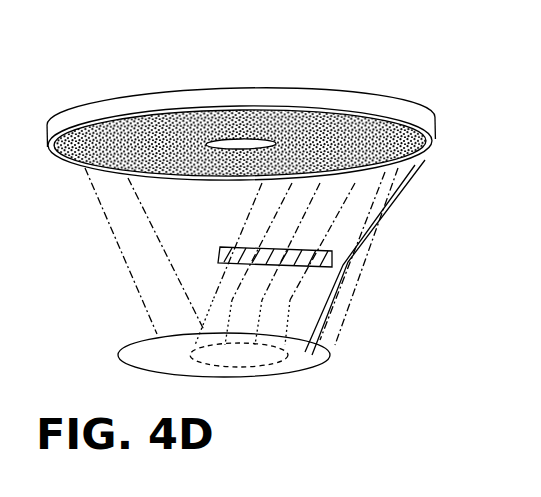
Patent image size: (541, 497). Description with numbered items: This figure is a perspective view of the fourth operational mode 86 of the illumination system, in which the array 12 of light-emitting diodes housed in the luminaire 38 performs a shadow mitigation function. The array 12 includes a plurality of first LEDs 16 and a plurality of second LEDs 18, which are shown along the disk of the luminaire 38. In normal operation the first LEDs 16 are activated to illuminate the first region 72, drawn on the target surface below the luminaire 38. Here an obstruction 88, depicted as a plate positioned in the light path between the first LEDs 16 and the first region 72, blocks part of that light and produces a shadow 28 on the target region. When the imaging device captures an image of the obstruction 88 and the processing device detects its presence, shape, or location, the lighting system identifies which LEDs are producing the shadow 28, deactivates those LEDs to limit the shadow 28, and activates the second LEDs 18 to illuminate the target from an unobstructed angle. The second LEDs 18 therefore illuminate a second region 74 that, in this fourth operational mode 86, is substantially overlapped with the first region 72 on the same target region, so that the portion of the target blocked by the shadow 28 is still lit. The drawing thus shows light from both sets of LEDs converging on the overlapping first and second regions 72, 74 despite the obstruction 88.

The array 12 is at (427, 158).
The first LEDs 16 is at (372, 148).
The second LEDs 18 is at (118, 146).
The shadow 28 is at (307, 298).
The luminaire 38 is at (393, 97).
The first region 72 is at (253, 367).
The second region 74 is at (137, 344).
The fourth operational mode 86 is at (90, 233).
The obstruction 88 is at (337, 258).